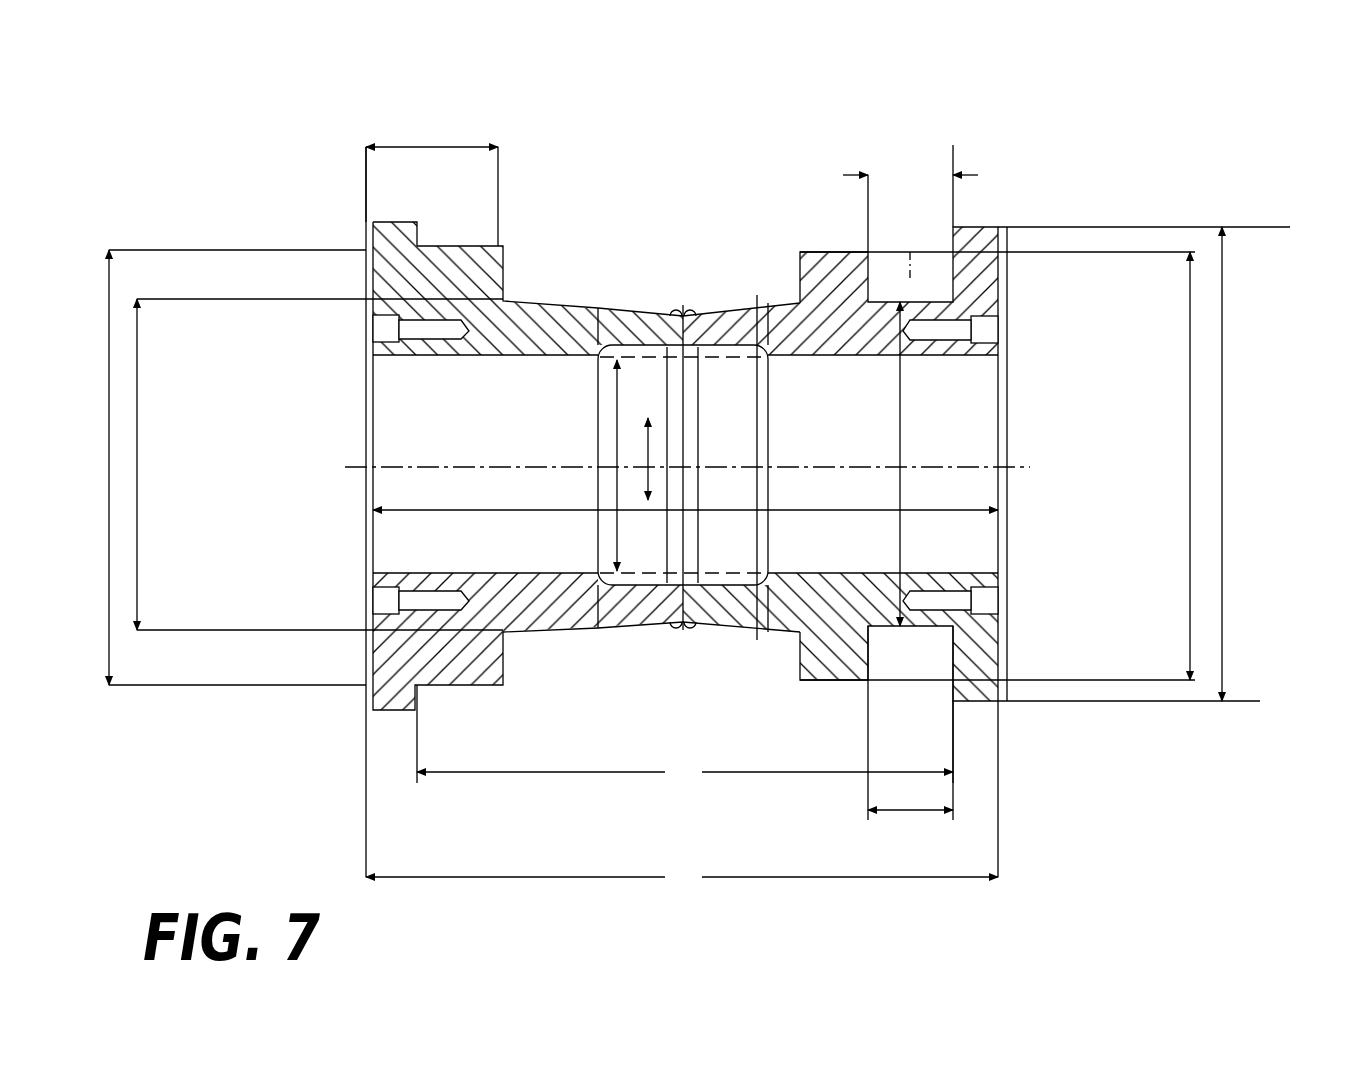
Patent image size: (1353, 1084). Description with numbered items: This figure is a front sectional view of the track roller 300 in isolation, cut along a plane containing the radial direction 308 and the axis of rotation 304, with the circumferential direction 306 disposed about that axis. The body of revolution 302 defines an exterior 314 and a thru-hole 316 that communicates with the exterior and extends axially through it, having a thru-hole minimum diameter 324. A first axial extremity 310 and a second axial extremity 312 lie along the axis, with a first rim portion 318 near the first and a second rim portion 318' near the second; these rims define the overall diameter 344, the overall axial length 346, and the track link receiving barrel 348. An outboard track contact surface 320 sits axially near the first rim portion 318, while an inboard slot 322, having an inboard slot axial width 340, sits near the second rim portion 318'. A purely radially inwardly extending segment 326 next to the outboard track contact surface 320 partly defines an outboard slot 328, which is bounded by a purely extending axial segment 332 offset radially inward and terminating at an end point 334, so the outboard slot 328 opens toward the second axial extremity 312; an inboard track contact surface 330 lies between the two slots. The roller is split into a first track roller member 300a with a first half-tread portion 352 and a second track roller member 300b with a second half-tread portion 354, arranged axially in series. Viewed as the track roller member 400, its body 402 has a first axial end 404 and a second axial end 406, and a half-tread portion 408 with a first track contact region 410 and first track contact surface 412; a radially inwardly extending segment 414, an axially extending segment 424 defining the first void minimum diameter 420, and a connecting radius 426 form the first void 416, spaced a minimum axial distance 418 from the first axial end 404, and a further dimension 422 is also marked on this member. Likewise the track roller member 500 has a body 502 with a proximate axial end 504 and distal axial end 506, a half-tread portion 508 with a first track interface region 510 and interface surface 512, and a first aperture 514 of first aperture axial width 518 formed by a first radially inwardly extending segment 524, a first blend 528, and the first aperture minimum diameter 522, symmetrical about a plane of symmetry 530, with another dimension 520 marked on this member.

The track roller 300 is at (665, 300).
The first track roller member 300a is at (475, 696).
The second track roller member 300b is at (830, 692).
The body of revolution 302 is at (718, 300).
The axis of rotation 304 is at (707, 465).
The circumferential direction 306 is at (757, 482).
The radial direction 308 is at (648, 457).
The first axial extremity 310 is at (366, 290).
The second axial extremity 312 is at (1003, 295).
The exterior 314 is at (1012, 578).
The thru-hole 316 is at (937, 410).
The first rim portion 318 is at (334, 157).
The second rim portion 318' is at (1017, 154).
The outboard track contact surface 320 is at (470, 246).
The inboard slot 322 is at (897, 285).
The thru-hole minimum diameter 324 is at (617, 433).
The purely radially inwardly extending segment 326 is at (505, 290).
The outboard slot 328 is at (555, 288).
The inboard track contact surface 330 is at (822, 250).
The purely extending axial segment 332 is at (555, 278).
The end point 334 is at (527, 305).
The inboard slot axial width 340 is at (970, 175).
The overall diameter 344 is at (1222, 520).
The overall axial length 346 is at (682, 877).
The track link receiving barrel 348 is at (685, 737).
The first half-tread portion 352 is at (502, 690).
The second half-tread portion 354 is at (803, 692).
The track roller member 400 is at (353, 236).
The body 402 is at (392, 660).
The first axial end 404 is at (370, 603).
The second axial end 406 is at (683, 632).
The half-tread portion 408 is at (500, 246).
The first track contact region 410 is at (432, 246).
The first track contact surface 412 is at (458, 246).
The radially inwardly extending segment 414 is at (525, 290).
The first void 416 is at (555, 262).
The minimum axial distance 418 is at (400, 147).
The first void minimum diameter 420 is at (137, 490).
The outer flange height 422 is at (109, 452).
The axially extending segment 424 is at (515, 357).
The radius 426 is at (517, 290).
The track roller member 500 is at (1012, 637).
The body 502 is at (992, 665).
The proximate axial end 504 is at (995, 262).
The distal axial end 506 is at (705, 355).
The half-tread portion 508 is at (900, 250).
The first track interface region 510 is at (815, 250).
The interface surface 512 is at (935, 812).
The first aperture 514 is at (885, 287).
The first aperture axial width 518 is at (845, 175).
The hub outer diameter 520 is at (1190, 468).
The first aperture minimum diameter 522 is at (900, 535).
The first radially inwardly extending segment 524 is at (947, 660).
The first blend 528 is at (915, 633).
The plane of symmetry 530 is at (925, 250).